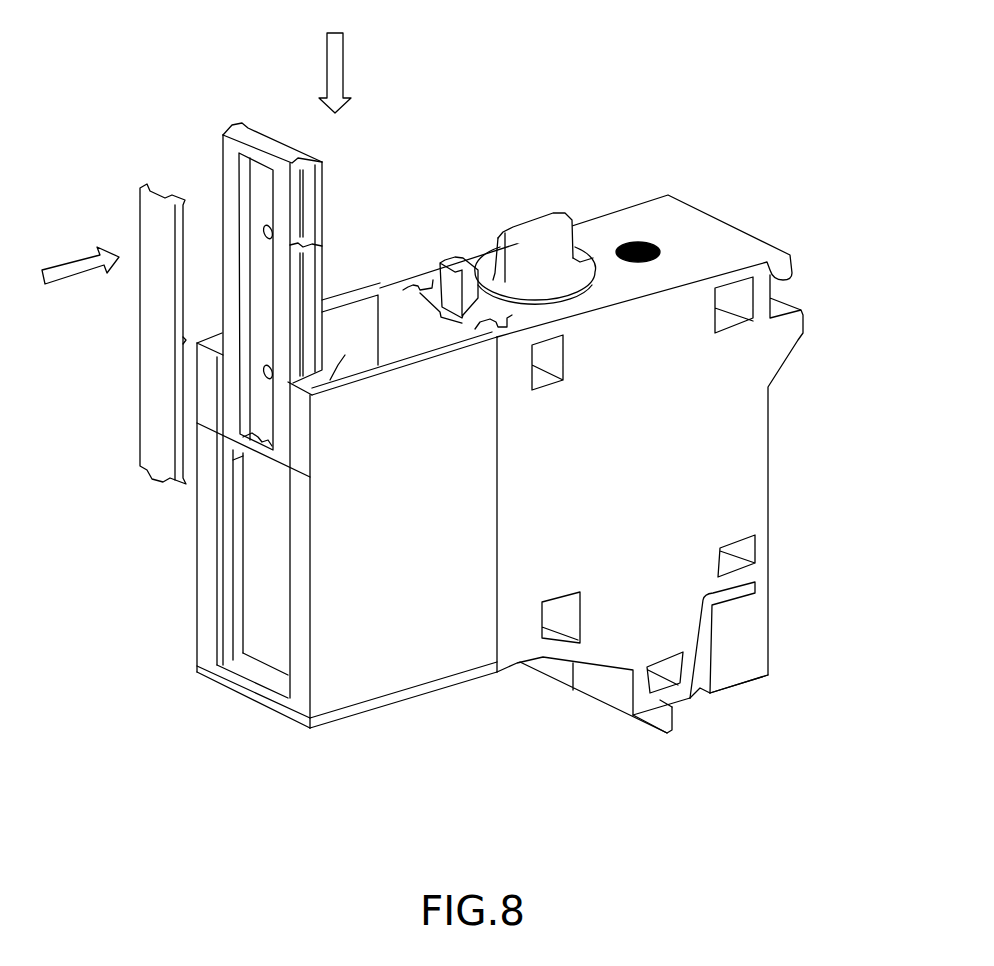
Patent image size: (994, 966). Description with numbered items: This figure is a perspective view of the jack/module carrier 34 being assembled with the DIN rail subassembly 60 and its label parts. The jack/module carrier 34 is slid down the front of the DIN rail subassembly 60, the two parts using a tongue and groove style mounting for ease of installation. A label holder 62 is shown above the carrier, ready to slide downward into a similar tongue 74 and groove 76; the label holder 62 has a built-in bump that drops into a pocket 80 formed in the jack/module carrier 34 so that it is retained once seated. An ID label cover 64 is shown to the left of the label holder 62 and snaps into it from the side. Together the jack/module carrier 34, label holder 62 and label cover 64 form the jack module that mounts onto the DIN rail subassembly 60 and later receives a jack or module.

The jack/module carrier 34 is at (248, 693).
The DIN rail subassembly 60 is at (730, 483).
The label holder 62 is at (245, 130).
The ID label cover 64 is at (155, 343).
The tongue 74 is at (320, 180).
The groove 76 is at (330, 378).
The pocket 80 is at (273, 593).